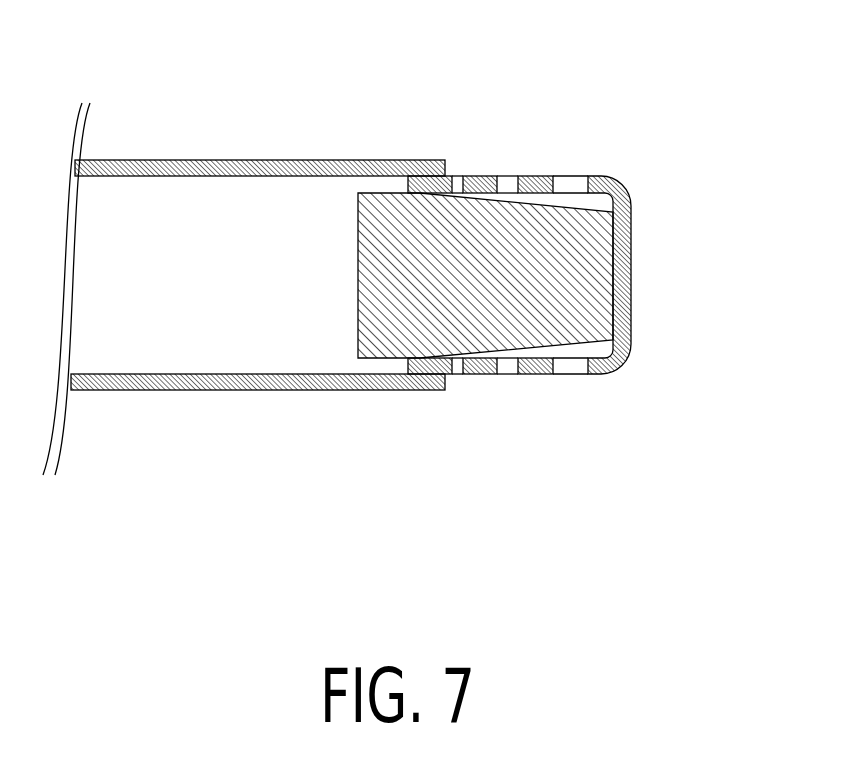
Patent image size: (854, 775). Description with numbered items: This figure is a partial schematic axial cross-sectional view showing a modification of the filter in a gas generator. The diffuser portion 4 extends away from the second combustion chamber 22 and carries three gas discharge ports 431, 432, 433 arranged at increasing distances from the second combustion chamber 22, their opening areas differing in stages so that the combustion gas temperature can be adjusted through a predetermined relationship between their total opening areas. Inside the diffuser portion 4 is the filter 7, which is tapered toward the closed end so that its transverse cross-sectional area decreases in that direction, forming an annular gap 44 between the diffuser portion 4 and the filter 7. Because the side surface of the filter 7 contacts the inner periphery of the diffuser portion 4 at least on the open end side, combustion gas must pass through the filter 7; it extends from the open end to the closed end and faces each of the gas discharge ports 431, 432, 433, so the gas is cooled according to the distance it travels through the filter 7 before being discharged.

The second combustion chamber 22 is at (150, 291).
The diffuser portion 4 is at (580, 267).
The gas discharge port 431 is at (457, 175).
The gas discharge port 432 is at (509, 175).
The gas discharge port 433 is at (566, 175).
The annular gap 44 is at (623, 188).
The filter 7 is at (358, 312).